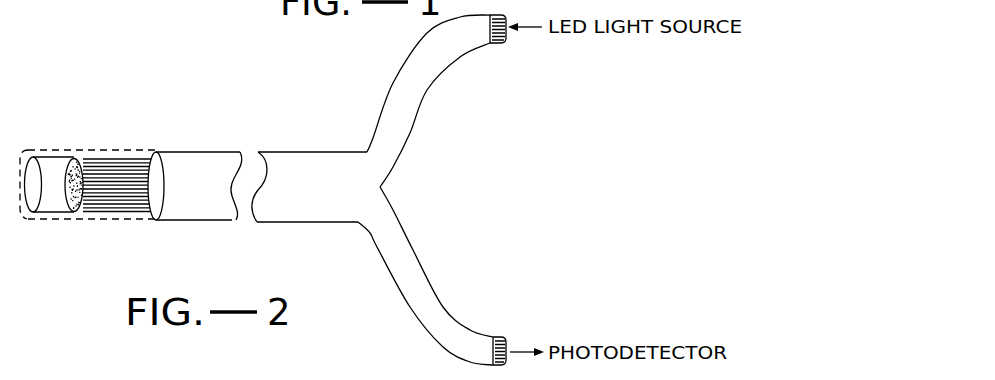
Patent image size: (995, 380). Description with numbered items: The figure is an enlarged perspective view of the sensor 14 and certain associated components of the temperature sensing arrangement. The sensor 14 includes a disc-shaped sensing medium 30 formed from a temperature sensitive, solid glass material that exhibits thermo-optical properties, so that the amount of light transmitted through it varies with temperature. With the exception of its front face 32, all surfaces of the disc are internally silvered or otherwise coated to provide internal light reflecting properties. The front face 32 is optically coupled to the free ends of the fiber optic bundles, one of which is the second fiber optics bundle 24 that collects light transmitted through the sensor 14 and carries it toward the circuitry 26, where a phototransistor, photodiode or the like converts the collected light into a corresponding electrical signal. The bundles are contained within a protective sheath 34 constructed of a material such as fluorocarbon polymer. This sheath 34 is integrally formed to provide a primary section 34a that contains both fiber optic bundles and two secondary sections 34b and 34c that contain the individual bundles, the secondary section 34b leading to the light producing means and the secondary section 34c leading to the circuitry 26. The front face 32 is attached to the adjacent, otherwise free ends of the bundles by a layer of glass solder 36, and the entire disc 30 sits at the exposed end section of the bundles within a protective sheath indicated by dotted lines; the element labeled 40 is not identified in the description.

The sensor probe tip 14 is at (87, 171).
The photodetector connector 24 is at (503, 338).
The LED light source connector 26 is at (500, 16).
The cavity of tip housing 30 is at (52, 200).
The fiber bundle end face 32 is at (63, 214).
The bifurcated fiber optic cable 34 is at (330, 190).
The common leg of fiber optic cable 34a is at (288, 208).
The light source leg of fiber optic cable 34b is at (418, 88).
The photodetector leg of fiber optic cable 34c is at (430, 290).
The optical fibers 36 is at (97, 156).
The sensing element window 40 is at (20, 218).